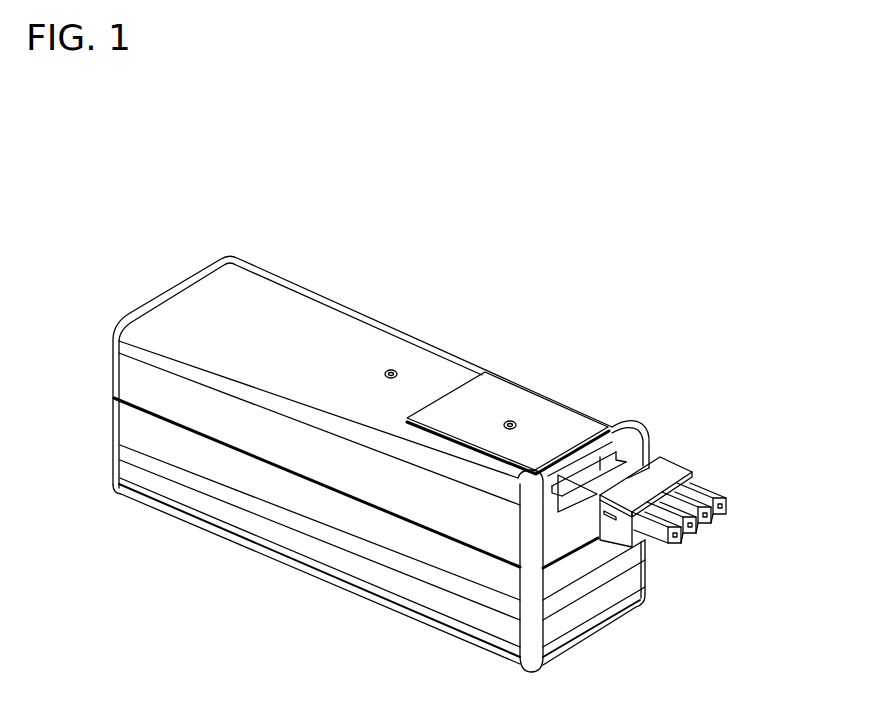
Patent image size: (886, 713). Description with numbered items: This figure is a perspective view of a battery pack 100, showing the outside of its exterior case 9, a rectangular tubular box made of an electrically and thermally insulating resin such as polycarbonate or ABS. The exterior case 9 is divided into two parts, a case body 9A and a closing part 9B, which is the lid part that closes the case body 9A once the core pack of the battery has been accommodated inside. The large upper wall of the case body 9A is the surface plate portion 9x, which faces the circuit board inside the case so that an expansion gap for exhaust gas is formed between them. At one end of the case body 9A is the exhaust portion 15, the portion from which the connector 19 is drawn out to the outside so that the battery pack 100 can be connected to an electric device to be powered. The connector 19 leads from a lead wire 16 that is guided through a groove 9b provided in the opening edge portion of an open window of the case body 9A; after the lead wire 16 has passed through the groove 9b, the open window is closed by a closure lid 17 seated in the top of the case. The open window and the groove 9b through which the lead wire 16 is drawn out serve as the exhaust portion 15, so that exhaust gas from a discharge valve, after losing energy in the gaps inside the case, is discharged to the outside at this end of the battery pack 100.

The battery pack 100 is at (601, 258).
The exterior case 9 is at (352, 642).
The case body 9A is at (342, 380).
The closing part 9B is at (202, 527).
The surface plate portion 9x is at (318, 323).
The closure lid 17 is at (505, 405).
The lead wire 16 is at (612, 430).
The groove 9b is at (608, 575).
The exhaust portion 15 is at (568, 465).
The connector 19 is at (702, 454).